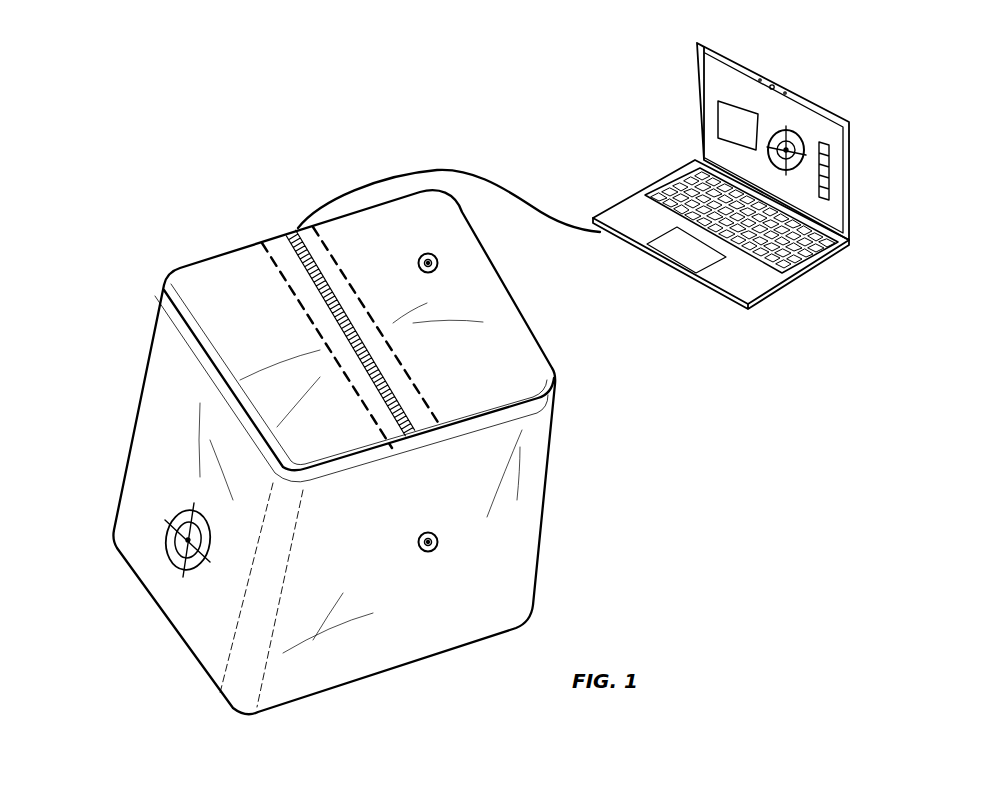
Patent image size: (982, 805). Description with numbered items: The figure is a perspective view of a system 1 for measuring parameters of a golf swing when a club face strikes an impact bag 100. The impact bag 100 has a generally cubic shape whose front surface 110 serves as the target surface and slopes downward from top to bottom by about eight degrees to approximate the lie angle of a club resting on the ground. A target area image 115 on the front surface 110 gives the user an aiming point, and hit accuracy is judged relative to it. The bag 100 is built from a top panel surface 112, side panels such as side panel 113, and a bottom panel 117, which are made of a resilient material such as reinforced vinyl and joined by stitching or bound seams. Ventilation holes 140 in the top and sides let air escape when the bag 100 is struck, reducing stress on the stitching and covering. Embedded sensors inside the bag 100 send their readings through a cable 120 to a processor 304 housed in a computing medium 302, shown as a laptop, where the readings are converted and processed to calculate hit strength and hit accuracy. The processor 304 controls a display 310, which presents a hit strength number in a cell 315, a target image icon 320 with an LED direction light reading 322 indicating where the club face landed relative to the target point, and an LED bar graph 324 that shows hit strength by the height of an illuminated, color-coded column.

The system 1 is at (150, 750).
The impact bag 100 is at (322, 469).
The front surface 110 is at (175, 668).
The top panel surface 112 is at (354, 383).
The side panel 113 is at (382, 574).
The target area image 115 is at (160, 560).
The bottom panel 117 is at (267, 735).
The cable 120 is at (388, 183).
The ventilation holes 140 is at (452, 256).
The computing medium 302 is at (742, 201).
The processor 304 is at (687, 158).
The display 310 is at (757, 129).
The cell 315 is at (716, 103).
The target image icon 320 is at (778, 133).
The LED direction light reading 322 is at (800, 135).
The LED bar graph 324 is at (828, 143).